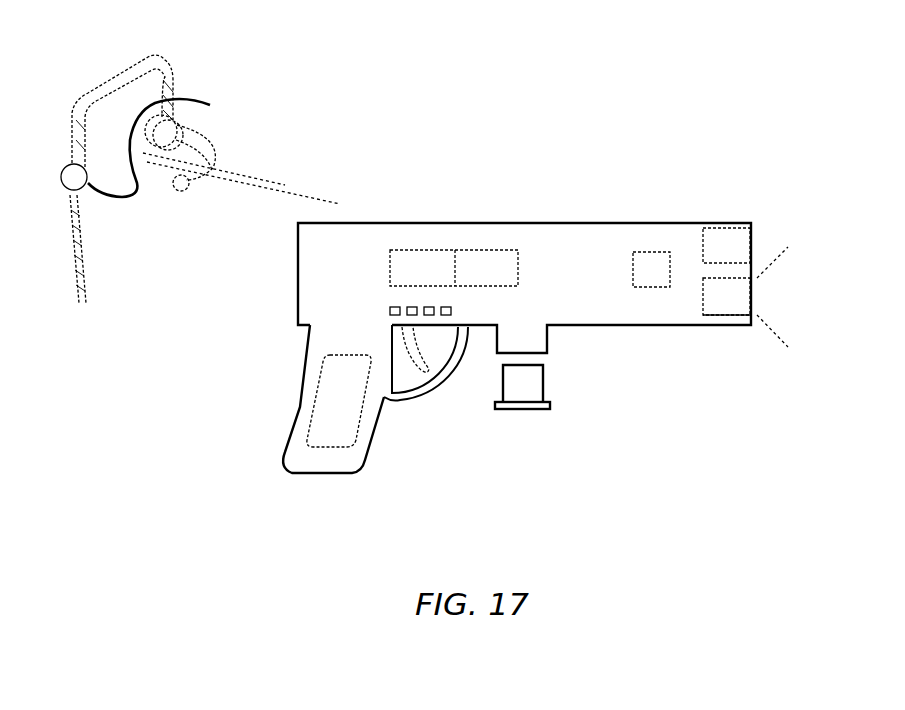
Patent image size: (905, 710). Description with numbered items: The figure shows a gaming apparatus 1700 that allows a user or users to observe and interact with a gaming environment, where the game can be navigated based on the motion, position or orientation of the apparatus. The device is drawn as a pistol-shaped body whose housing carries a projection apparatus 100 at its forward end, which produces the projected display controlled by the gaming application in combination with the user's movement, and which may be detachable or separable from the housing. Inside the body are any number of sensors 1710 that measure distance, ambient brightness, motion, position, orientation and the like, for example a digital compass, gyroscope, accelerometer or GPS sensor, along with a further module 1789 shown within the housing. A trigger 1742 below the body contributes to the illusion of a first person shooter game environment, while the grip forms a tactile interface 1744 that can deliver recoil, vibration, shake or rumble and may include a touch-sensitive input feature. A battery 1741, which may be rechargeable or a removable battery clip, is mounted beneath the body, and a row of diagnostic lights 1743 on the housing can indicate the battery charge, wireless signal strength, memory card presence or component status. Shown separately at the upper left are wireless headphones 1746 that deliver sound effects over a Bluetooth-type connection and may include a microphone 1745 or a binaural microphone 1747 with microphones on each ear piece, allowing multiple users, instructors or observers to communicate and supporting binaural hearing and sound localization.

The gaming apparatus 1700 is at (523, 104).
The sensors 1710 is at (424, 260).
The module 1789 is at (546, 220).
The projection apparatus 100 is at (722, 303).
The battery 1741 is at (532, 410).
The trigger 1742 is at (440, 383).
The diagnostic lights 1743 is at (390, 310).
The tactile interface 1744 is at (322, 380).
The microphone 1745 is at (184, 193).
The wireless headphones 1746 is at (137, 68).
The binaural microphone 1747 is at (162, 128).